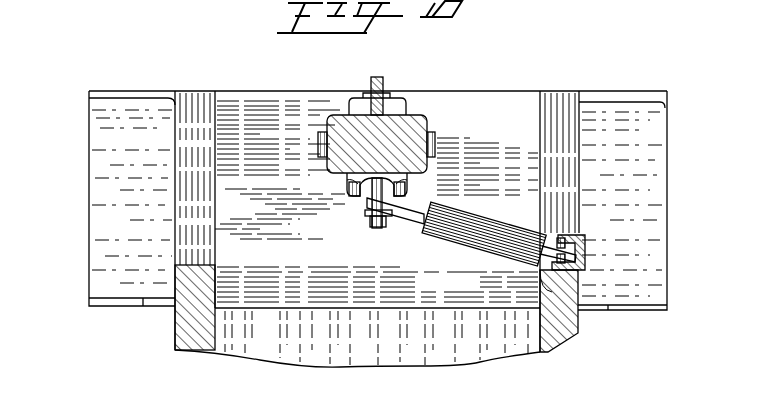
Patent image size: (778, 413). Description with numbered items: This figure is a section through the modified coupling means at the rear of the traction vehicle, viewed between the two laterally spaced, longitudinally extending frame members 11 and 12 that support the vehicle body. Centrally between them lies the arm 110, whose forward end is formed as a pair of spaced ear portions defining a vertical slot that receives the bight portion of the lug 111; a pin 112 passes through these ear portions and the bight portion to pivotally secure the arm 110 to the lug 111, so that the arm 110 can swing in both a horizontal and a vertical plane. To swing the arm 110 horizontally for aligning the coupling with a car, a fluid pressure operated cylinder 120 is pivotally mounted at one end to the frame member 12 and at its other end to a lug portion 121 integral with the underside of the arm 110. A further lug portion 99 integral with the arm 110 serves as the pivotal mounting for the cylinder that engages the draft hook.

The frame member 11 is at (192, 322).
The frame member 12 is at (565, 337).
The lug portion 99 is at (383, 87).
The arm 110 is at (413, 125).
The lug 111 is at (349, 107).
The pin 112 is at (318, 141).
The fluid pressure operated cylinder 120 is at (513, 238).
The lug portion 121 is at (365, 213).